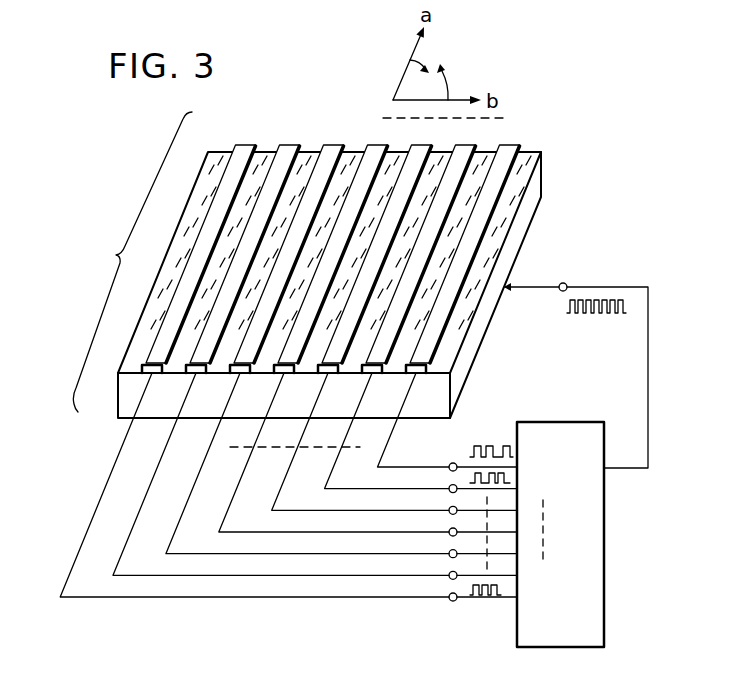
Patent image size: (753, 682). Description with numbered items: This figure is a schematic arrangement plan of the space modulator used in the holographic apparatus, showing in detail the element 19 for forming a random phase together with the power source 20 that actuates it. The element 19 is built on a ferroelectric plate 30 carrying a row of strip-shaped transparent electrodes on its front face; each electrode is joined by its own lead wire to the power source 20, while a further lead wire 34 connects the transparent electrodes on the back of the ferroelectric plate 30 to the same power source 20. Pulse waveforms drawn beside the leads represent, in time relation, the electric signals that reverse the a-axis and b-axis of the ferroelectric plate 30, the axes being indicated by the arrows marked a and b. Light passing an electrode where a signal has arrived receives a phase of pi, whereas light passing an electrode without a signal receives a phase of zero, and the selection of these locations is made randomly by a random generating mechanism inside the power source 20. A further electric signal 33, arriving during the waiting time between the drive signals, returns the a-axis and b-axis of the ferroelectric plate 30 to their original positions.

The element for forming a random phase 19 is at (132, 262).
The ferroelectric plate 30 is at (541, 191).
The electric signal 33 is at (586, 316).
The lead wire 34 is at (528, 287).
The power source 20 is at (604, 532).